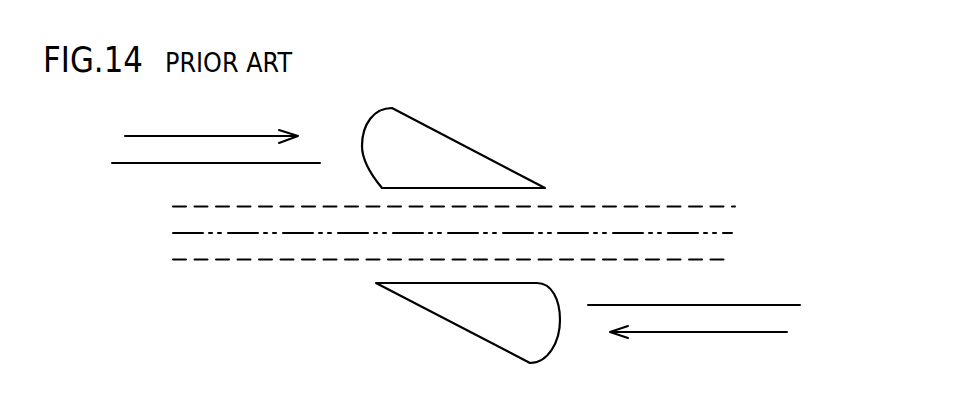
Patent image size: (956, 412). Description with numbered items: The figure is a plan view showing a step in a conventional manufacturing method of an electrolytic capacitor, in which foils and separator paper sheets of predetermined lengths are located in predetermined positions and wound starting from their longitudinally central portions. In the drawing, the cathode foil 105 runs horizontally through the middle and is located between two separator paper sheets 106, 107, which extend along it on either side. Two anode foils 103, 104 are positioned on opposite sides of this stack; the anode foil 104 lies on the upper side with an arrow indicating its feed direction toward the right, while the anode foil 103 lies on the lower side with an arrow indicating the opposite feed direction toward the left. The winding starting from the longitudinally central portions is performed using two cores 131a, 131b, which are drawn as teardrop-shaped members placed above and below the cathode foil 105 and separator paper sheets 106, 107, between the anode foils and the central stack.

The anode foil 103 is at (785, 305).
The anode foil 104 is at (123, 163).
The cathode foil 105 is at (730, 235).
The separator paper sheet 106 is at (726, 261).
The separator paper sheet 107 is at (735, 208).
The core 131a is at (432, 152).
The core 131b is at (487, 315).